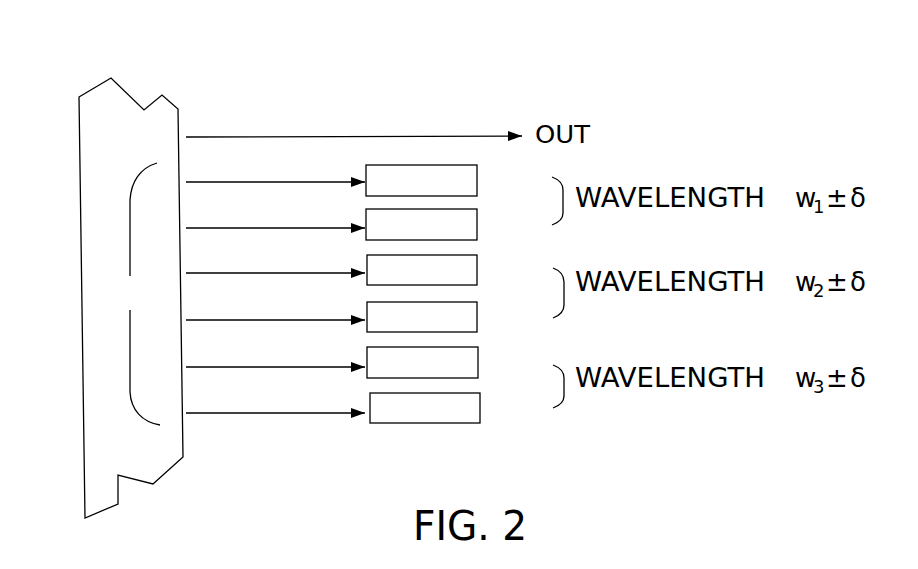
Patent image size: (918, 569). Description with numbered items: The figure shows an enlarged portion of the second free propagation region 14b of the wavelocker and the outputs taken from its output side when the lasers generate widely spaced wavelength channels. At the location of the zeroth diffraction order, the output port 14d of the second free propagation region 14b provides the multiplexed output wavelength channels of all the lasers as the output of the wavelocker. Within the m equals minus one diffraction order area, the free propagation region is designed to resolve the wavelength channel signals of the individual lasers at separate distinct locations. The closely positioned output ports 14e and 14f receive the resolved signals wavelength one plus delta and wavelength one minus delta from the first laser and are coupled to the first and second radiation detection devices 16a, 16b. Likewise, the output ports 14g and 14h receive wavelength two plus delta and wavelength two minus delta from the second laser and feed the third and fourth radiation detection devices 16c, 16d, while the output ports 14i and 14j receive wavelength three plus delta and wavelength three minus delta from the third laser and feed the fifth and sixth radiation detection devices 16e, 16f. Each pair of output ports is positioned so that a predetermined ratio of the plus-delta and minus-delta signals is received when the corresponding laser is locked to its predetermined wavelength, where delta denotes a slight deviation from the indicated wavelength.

The second free propagation region 14b is at (79, 97).
The output port 14d is at (186, 136).
The output port 14e is at (186, 181).
The output port 14f is at (186, 227).
The output port 14g is at (186, 272).
The output port 14h is at (186, 319).
The output port 14i is at (186, 366).
The output port 14j is at (186, 412).
The first radiation detection device 16a is at (478, 181).
The second radiation detection device 16b is at (478, 226).
The third radiation detection device 16c is at (478, 271).
The fourth radiation detection device 16d is at (478, 318).
The fifth radiation detection device 16e is at (479, 365).
The sixth radiation detection device 16f is at (481, 411).